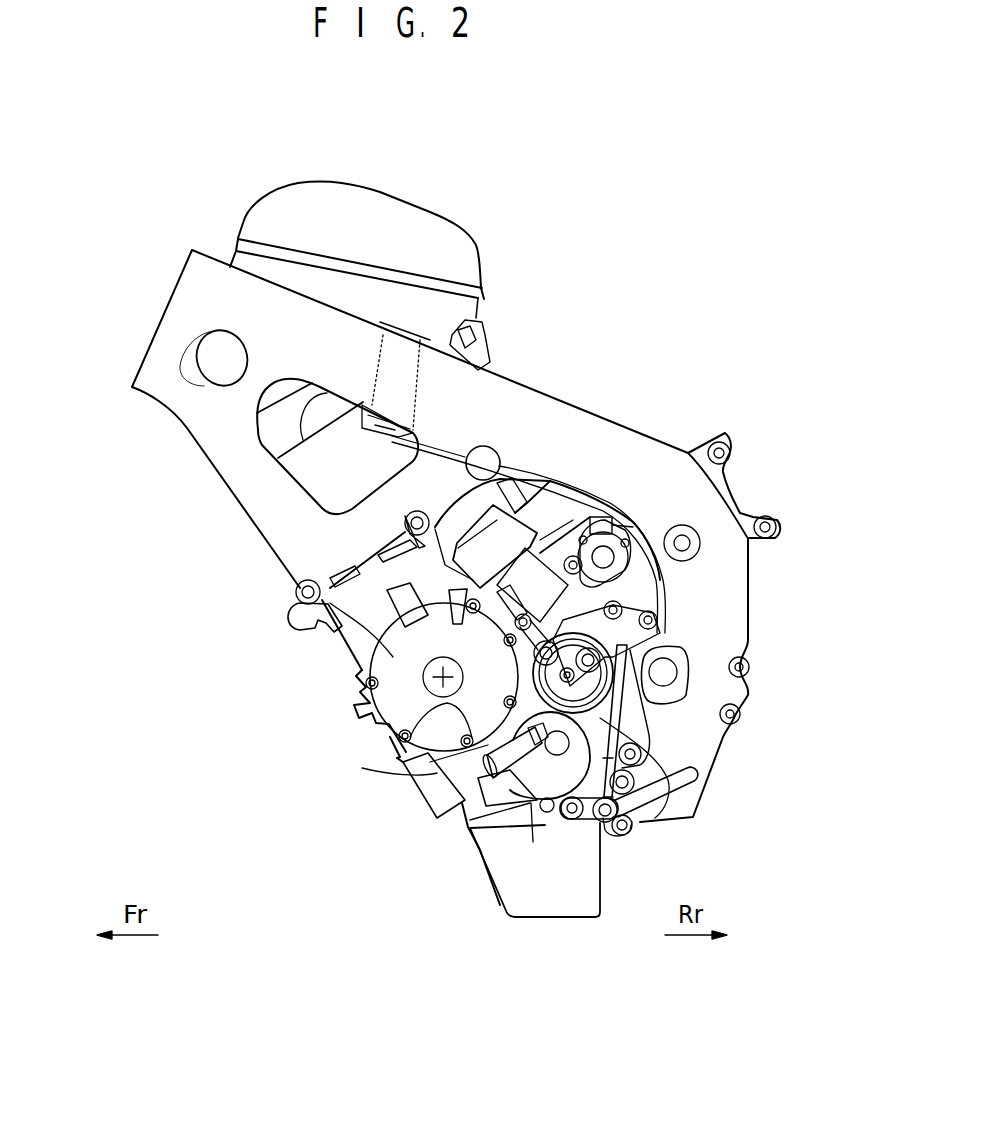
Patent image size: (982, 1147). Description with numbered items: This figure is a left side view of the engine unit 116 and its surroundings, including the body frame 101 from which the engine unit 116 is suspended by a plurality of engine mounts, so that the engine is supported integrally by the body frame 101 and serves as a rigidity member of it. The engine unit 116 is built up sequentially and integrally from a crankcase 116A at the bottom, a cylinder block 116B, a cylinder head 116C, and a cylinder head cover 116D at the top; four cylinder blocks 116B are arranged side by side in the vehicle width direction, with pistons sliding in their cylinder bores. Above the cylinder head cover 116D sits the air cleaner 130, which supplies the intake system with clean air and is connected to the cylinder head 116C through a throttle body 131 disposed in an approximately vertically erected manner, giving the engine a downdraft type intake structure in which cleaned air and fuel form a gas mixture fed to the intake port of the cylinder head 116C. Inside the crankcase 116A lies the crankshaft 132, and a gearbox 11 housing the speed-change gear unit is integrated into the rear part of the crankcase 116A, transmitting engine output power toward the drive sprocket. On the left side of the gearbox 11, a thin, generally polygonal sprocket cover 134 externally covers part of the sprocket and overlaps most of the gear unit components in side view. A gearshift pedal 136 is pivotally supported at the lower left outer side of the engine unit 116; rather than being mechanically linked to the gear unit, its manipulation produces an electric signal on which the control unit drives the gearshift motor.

The gearbox 11 is at (607, 735).
The body frame 101 is at (613, 421).
The engine unit 116 is at (257, 649).
The crankcase 116A is at (400, 750).
The cylinder block 116B is at (340, 648).
The cylinder head 116C is at (310, 485).
The cylinder head cover 116D is at (277, 435).
The air cleaner 130 is at (472, 237).
The throttle body 131 is at (427, 397).
The crankshaft 132 is at (440, 678).
The sprocket cover 134 is at (585, 686).
The gearshift pedal 136 is at (650, 808).